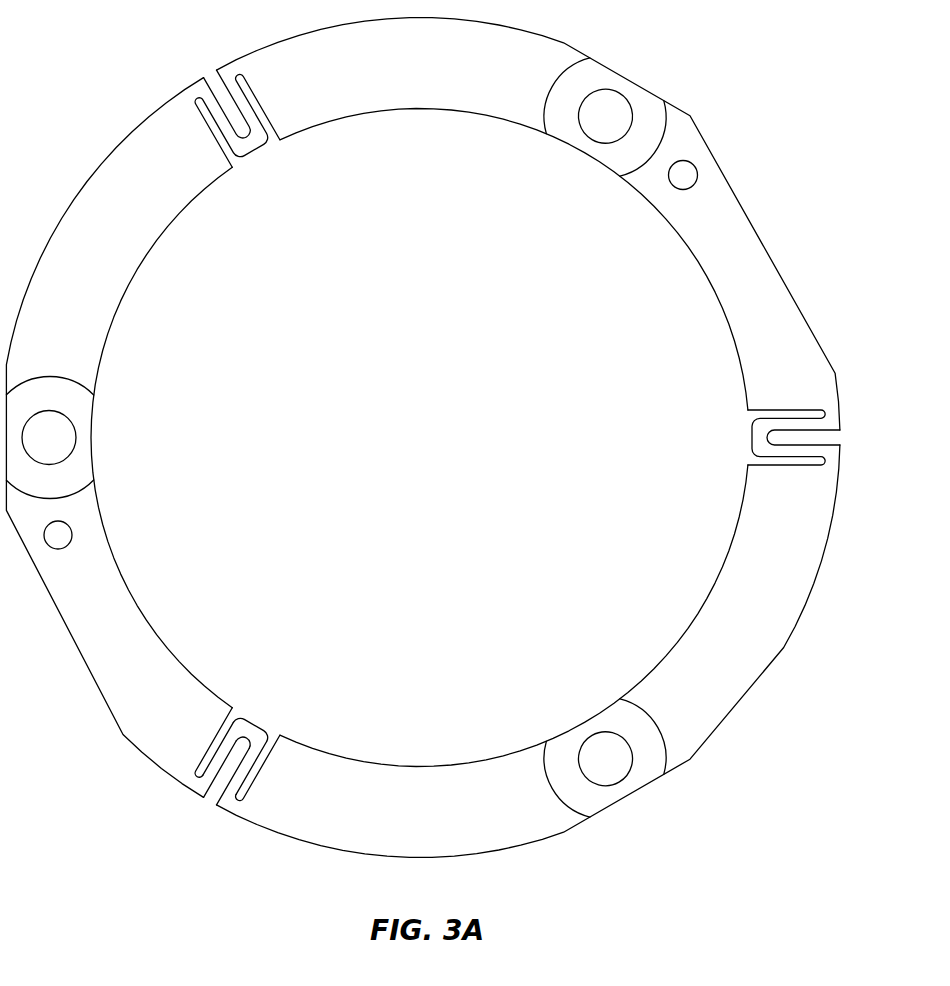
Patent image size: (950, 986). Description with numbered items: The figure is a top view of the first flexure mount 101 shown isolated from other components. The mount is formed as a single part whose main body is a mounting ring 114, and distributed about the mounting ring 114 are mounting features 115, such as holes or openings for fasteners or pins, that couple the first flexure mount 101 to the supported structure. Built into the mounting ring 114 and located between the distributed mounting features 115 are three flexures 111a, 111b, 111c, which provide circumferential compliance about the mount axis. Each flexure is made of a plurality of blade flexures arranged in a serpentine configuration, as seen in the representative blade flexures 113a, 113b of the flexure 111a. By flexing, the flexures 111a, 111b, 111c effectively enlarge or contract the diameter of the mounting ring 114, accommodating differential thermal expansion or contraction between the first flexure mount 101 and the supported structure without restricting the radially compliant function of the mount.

The first flexure mount 101 is at (102, 27).
The flexure 111a is at (268, 705).
The flexure 111b is at (720, 437).
The flexure 111c is at (262, 178).
The blade flexure 113a is at (212, 751).
The blade flexure 113b is at (249, 770).
The mounting ring 114 is at (122, 277).
The mounting features 115 is at (76, 431).